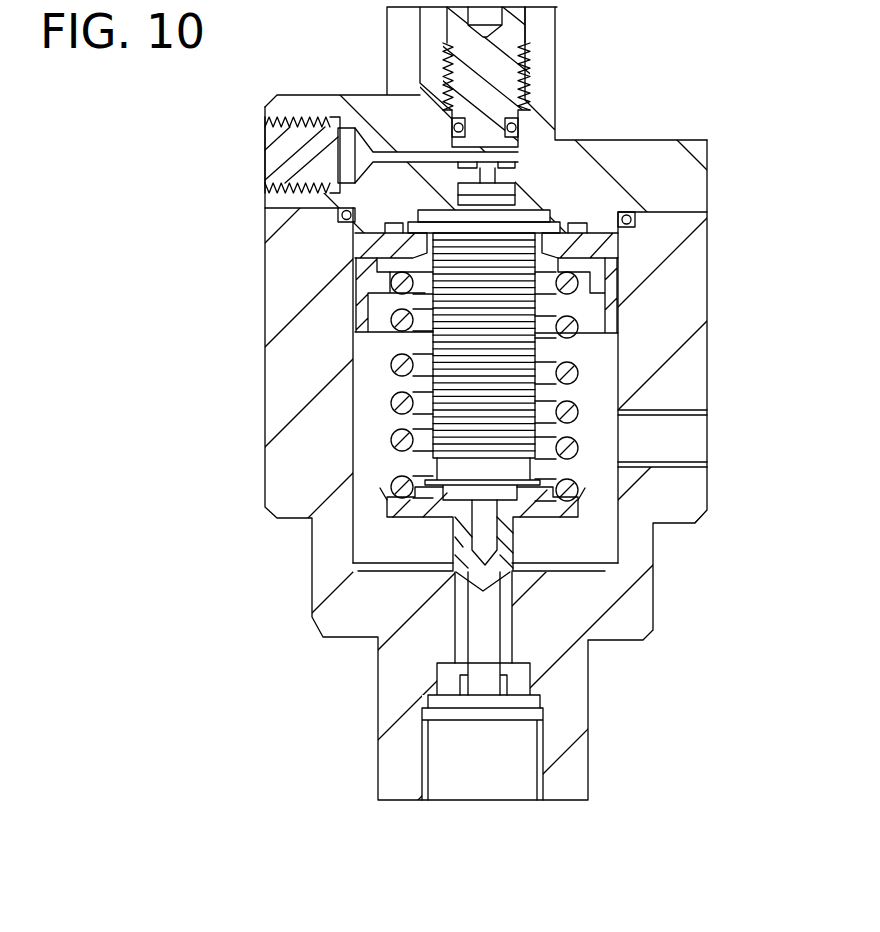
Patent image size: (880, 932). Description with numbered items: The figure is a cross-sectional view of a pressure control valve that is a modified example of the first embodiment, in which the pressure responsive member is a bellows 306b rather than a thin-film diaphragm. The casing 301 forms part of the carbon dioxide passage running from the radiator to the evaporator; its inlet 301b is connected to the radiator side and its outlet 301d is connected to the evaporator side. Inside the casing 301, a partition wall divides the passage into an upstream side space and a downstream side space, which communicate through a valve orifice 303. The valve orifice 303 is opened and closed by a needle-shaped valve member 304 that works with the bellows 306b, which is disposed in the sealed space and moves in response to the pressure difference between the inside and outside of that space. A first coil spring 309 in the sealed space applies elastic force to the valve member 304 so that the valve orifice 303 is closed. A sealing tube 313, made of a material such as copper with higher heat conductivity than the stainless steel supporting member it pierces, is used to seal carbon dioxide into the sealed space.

The casing 301 is at (721, 308).
The inlet 301b is at (672, 443).
The outlet 301d is at (458, 755).
The valve orifice 303 is at (490, 618).
The valve member 304 is at (453, 566).
The bellows 306b is at (497, 267).
The first coil spring 309 is at (580, 282).
The sealing tube 313 is at (290, 160).